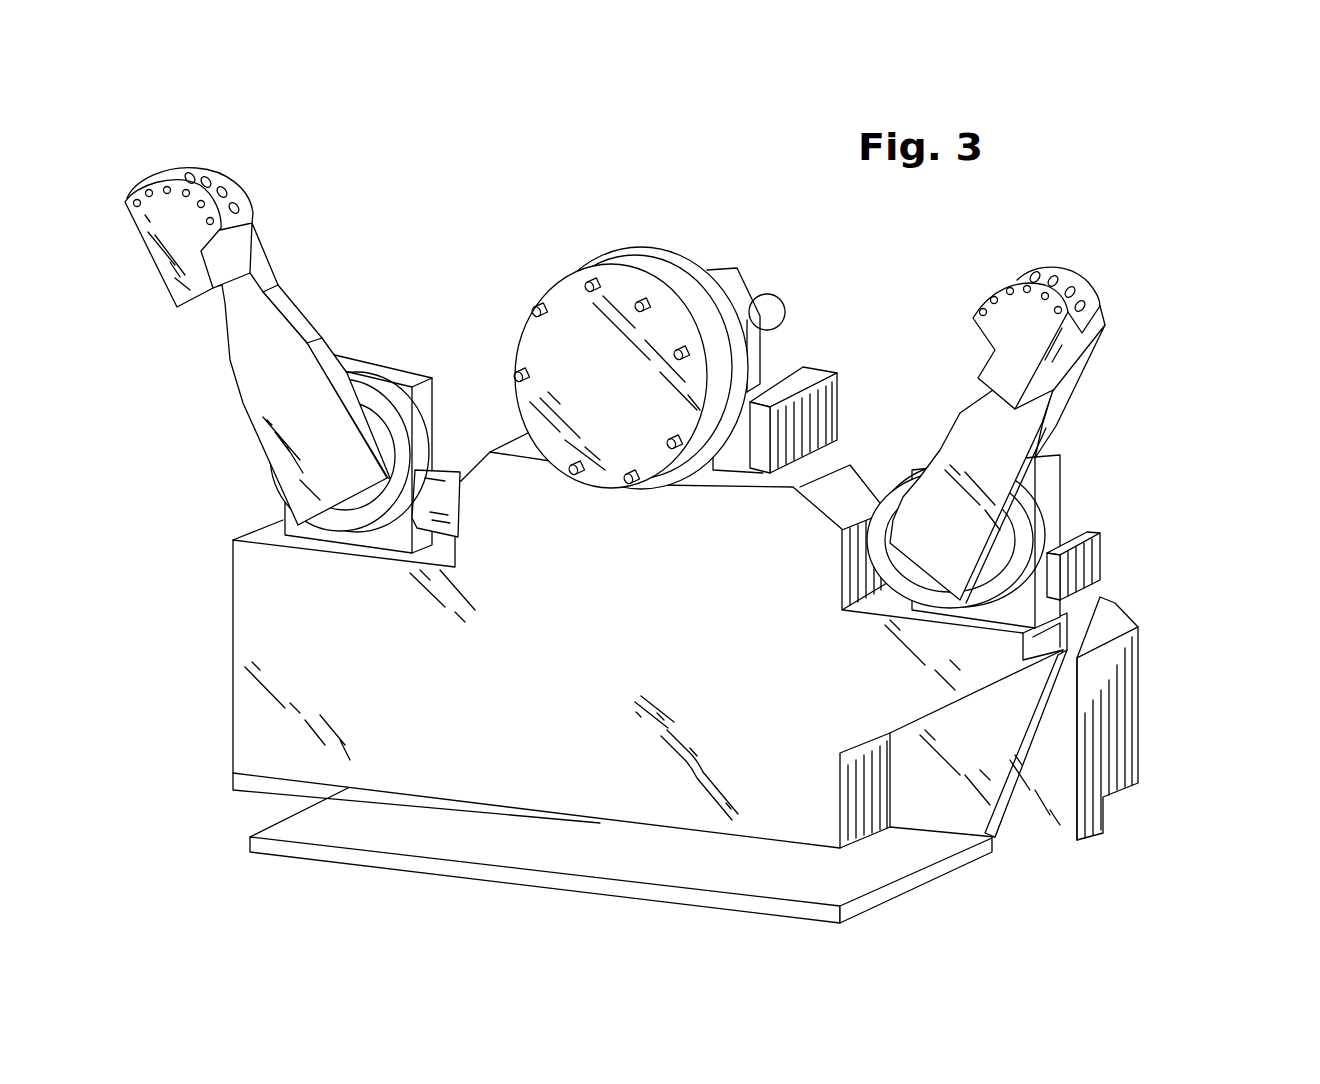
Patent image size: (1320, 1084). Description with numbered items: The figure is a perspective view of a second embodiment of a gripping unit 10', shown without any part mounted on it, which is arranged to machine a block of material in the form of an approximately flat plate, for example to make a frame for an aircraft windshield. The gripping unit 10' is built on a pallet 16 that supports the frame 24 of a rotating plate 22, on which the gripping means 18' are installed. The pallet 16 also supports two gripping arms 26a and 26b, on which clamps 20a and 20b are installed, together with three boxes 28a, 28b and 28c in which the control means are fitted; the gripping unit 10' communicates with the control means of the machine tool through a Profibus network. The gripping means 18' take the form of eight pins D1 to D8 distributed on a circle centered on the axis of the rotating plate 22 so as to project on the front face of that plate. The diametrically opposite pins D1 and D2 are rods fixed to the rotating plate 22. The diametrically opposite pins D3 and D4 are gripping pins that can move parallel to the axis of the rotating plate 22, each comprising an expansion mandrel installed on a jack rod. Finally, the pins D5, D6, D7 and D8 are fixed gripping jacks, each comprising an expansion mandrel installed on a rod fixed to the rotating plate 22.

The gripping unit 10' is at (417, 148).
The pallet 16 is at (292, 830).
The gripping means 18' is at (598, 354).
The clamp 20a is at (177, 192).
The clamp 20b is at (1021, 308).
The rotating plate 22 is at (663, 264).
The frame 24 is at (828, 392).
The gripping arm 26a is at (290, 314).
The gripping arm 26b is at (1008, 436).
The box 28a is at (272, 616).
The box 28b is at (583, 767).
The box 28c is at (1127, 716).
The pin D1 is at (595, 285).
The pin D2 is at (632, 478).
The gripping pin D3 is at (645, 300).
The gripping pin D4 is at (570, 468).
The fixed gripping jack D5 is at (683, 352).
The fixed gripping jack D6 is at (522, 375).
The fixed gripping jack D7 is at (675, 447).
The fixed gripping jack D8 is at (540, 310).